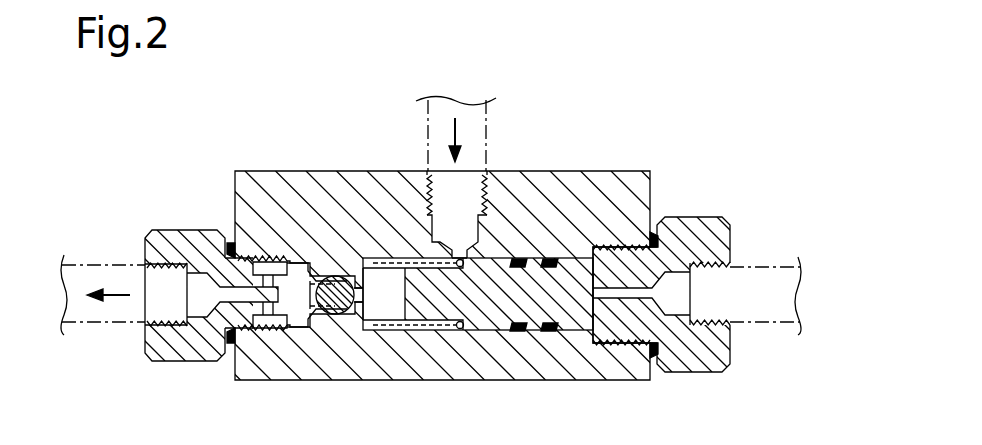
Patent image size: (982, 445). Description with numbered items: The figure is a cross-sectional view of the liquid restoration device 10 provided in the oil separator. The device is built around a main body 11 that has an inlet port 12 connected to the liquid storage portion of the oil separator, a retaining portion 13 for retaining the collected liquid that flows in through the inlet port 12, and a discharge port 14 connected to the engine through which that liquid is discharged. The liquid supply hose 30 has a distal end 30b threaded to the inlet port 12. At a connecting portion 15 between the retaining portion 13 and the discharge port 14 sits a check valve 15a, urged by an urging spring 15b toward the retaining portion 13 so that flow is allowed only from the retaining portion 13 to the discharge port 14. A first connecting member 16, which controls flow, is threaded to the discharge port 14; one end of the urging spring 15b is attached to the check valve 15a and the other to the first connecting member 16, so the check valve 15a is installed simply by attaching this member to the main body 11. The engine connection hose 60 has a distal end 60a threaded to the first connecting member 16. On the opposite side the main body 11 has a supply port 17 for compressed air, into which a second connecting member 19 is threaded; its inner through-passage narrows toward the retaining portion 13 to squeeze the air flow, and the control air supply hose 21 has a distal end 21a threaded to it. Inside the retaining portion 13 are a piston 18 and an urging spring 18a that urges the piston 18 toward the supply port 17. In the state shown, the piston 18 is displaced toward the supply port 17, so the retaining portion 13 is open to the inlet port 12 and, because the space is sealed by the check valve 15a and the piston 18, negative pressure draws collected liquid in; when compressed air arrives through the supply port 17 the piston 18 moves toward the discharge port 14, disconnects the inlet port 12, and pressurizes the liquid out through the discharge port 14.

The liquid restoration device 10 is at (687, 150).
The main body 11 is at (627, 171).
The inlet port 12 is at (481, 172).
The retaining portion 13 is at (378, 252).
The discharge port 14 is at (250, 268).
The connecting portion 15 is at (333, 338).
The check valve 15a is at (345, 250).
The urging spring 15b is at (305, 245).
The first connecting member 16 is at (162, 230).
The supply port 17 is at (655, 258).
The piston 18 is at (507, 330).
The urging spring 18a is at (418, 333).
The second connecting member 19 is at (700, 217).
The control air supply hose 21 is at (753, 266).
The distal end 21a is at (733, 340).
The liquid supply hose 30 is at (490, 148).
The distal end 30b is at (428, 192).
The engine connection hose 60 is at (100, 262).
The distal end 60a is at (160, 327).